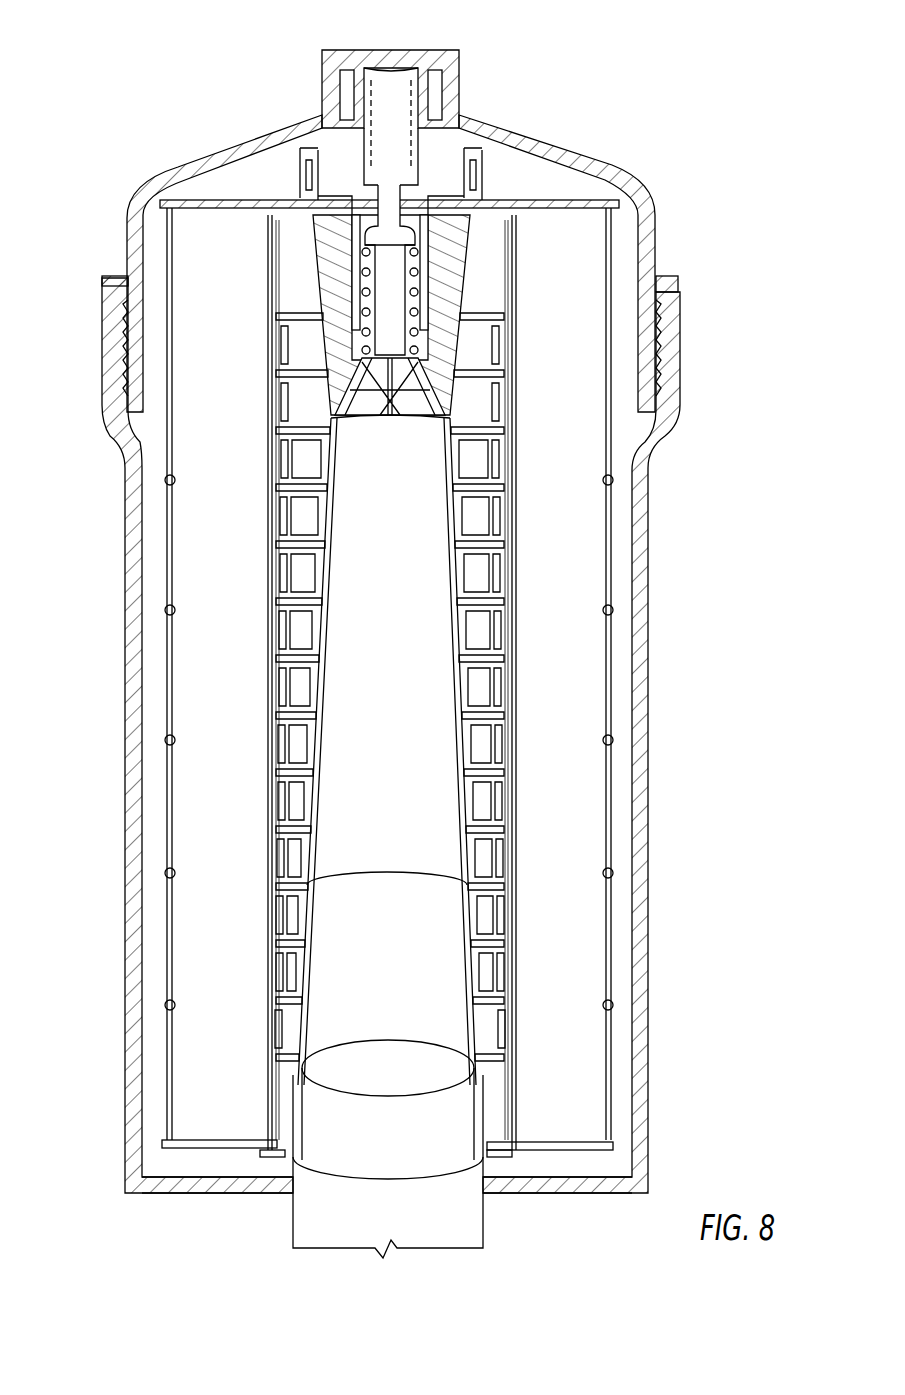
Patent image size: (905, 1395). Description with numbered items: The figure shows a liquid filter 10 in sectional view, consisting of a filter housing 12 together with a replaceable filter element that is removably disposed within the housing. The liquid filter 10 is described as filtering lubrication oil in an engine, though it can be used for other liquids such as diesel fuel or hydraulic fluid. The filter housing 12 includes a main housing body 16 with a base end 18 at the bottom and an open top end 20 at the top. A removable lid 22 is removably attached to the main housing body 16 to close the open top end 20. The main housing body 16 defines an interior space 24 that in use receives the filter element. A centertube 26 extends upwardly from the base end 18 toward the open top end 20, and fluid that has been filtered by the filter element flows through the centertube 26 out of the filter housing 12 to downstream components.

The liquid filter 10 is at (404, 649).
The filter housing 12 is at (652, 608).
The main housing body 16 is at (125, 733).
The base end 18 is at (186, 1190).
The open top end 20 is at (668, 306).
The removable lid 22 is at (205, 166).
The interior space 24 is at (157, 553).
The centertube 26 is at (520, 730).